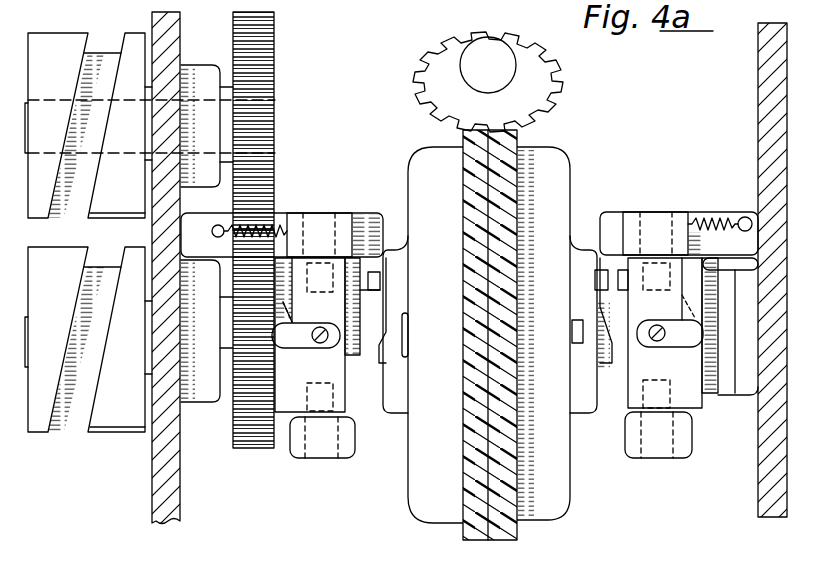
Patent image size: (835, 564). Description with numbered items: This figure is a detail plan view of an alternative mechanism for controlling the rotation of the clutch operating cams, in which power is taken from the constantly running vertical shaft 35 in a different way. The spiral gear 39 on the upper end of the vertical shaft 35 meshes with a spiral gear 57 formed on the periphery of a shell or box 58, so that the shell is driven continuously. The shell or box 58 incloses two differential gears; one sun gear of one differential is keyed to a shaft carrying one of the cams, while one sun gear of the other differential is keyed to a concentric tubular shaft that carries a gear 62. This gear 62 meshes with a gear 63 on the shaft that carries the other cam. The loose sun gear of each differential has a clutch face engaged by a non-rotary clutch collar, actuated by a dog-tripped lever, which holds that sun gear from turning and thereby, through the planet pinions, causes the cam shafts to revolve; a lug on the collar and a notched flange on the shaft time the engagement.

The vertical shaft 35 is at (488, 65).
The spiral gear 39 is at (556, 85).
The spiral gear 57 is at (510, 187).
The shell or box 58 is at (552, 190).
The gear 62 is at (233, 441).
The gear 63 is at (258, 69).